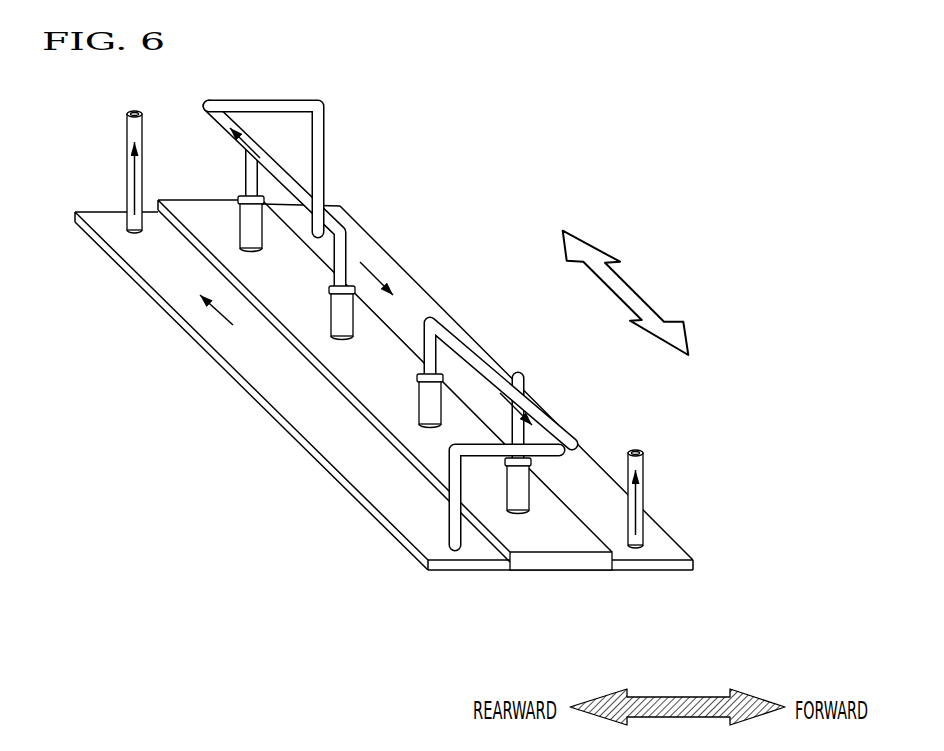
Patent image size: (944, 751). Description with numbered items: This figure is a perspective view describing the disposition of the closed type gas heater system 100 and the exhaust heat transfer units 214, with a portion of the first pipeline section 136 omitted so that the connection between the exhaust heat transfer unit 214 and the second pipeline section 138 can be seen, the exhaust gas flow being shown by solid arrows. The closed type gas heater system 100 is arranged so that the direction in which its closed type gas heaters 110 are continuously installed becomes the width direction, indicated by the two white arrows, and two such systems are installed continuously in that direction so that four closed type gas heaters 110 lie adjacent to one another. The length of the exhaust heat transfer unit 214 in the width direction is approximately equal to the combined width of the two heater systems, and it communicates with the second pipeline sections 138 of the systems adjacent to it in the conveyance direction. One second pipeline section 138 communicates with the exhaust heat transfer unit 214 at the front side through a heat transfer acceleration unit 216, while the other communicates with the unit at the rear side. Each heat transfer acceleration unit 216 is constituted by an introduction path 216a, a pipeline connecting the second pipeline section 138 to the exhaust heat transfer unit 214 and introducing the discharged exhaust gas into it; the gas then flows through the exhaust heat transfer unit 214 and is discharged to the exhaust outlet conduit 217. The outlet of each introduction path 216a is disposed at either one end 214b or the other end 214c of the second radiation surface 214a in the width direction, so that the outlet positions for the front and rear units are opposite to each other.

The closed type gas heater system 100 is at (390, 310).
The closed type gas heater 110 is at (232, 251).
The first pipeline section 136 is at (351, 311).
The second pipeline section 138 is at (349, 262).
The exhaust heat transfer unit 214 is at (391, 390).
The second radiation surface 214a is at (683, 543).
The one end 214b is at (470, 567).
The other end 214c is at (108, 212).
The heat transfer acceleration unit 216 is at (384, 363).
The introduction path 216a is at (323, 160).
The exhaust outlet conduit 217 is at (142, 137).